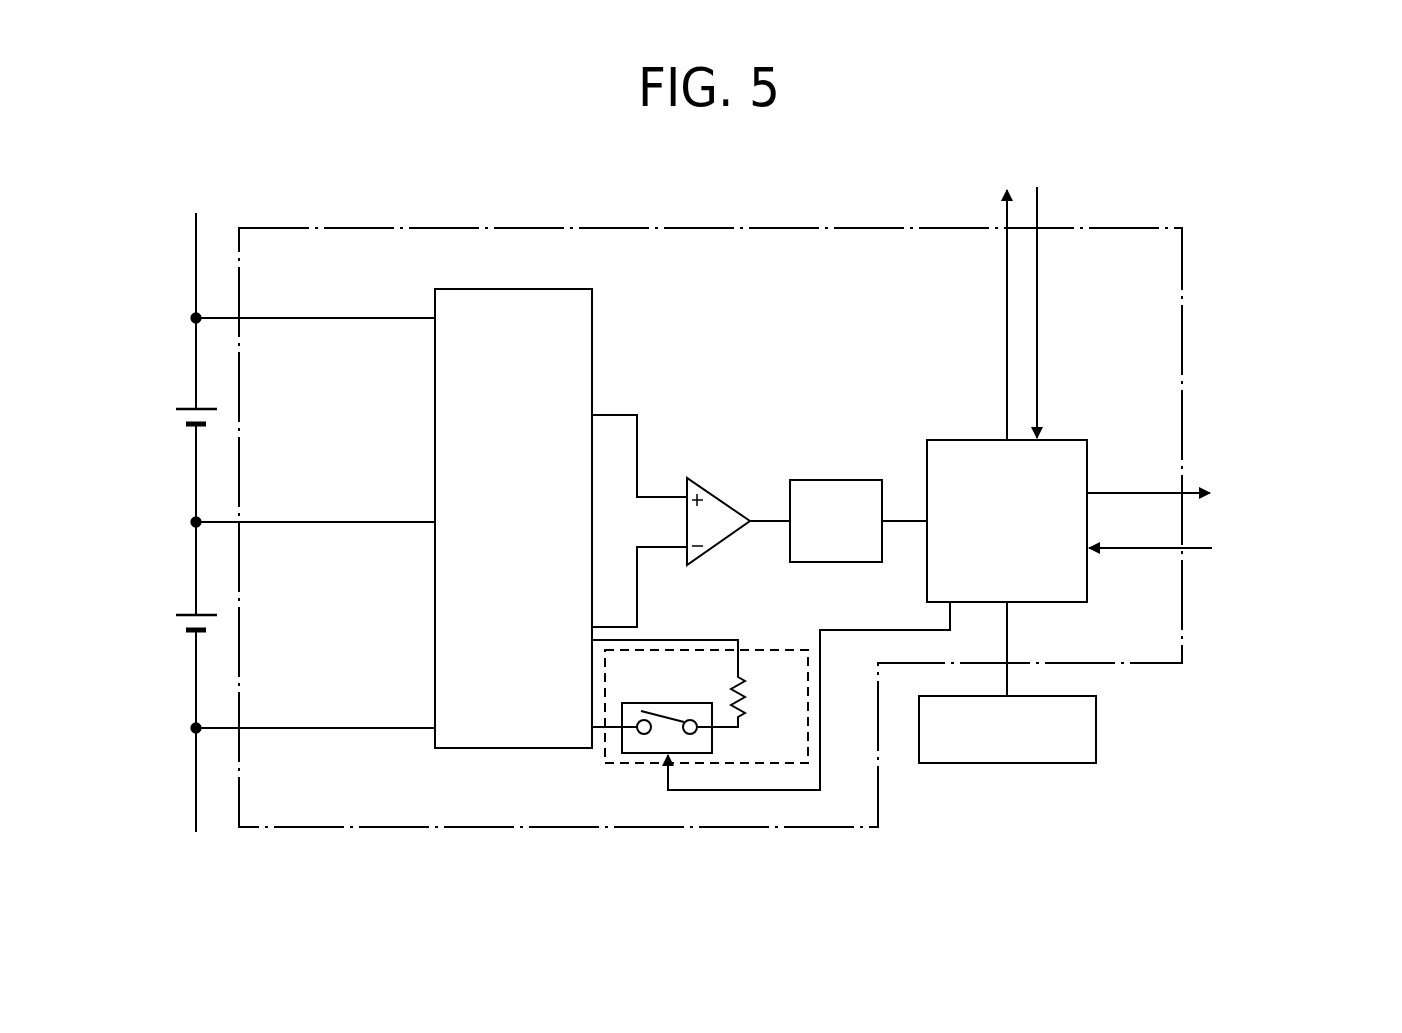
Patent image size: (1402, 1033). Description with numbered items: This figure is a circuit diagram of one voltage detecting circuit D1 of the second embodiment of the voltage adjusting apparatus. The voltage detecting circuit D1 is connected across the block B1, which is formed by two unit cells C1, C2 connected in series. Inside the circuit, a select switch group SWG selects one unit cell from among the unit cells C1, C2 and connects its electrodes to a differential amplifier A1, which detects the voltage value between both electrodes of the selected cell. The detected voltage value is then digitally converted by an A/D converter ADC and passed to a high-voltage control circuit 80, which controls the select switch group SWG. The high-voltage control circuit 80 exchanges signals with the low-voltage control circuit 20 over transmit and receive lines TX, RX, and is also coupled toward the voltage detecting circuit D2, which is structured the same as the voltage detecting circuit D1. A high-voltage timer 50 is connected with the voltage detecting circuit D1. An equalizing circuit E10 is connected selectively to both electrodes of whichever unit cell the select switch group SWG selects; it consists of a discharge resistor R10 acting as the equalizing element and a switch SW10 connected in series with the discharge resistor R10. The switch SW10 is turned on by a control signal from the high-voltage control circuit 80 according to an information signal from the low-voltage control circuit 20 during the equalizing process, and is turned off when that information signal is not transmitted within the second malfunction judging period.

The voltage detecting circuit D1 is at (705, 228).
The block B1 is at (110, 400).
The unit cell C1 is at (174, 623).
The unit cell C2 is at (174, 420).
The select switch group SWG is at (592, 350).
The differential amplifier A1 is at (710, 488).
The A/D converter ADC is at (850, 480).
The high-voltage control circuit 80 is at (1058, 440).
The voltage detecting circuit D2 is at (1024, 283).
The transmit line TX is at (1148, 480).
The receive line RX is at (1150, 535).
The low-voltage control circuit 20 is at (1297, 521).
The high-voltage timer 50 is at (1097, 717).
The equalizing circuit E10 is at (772, 650).
The discharge resistor R10 is at (698, 683).
The switch SW10 is at (668, 703).